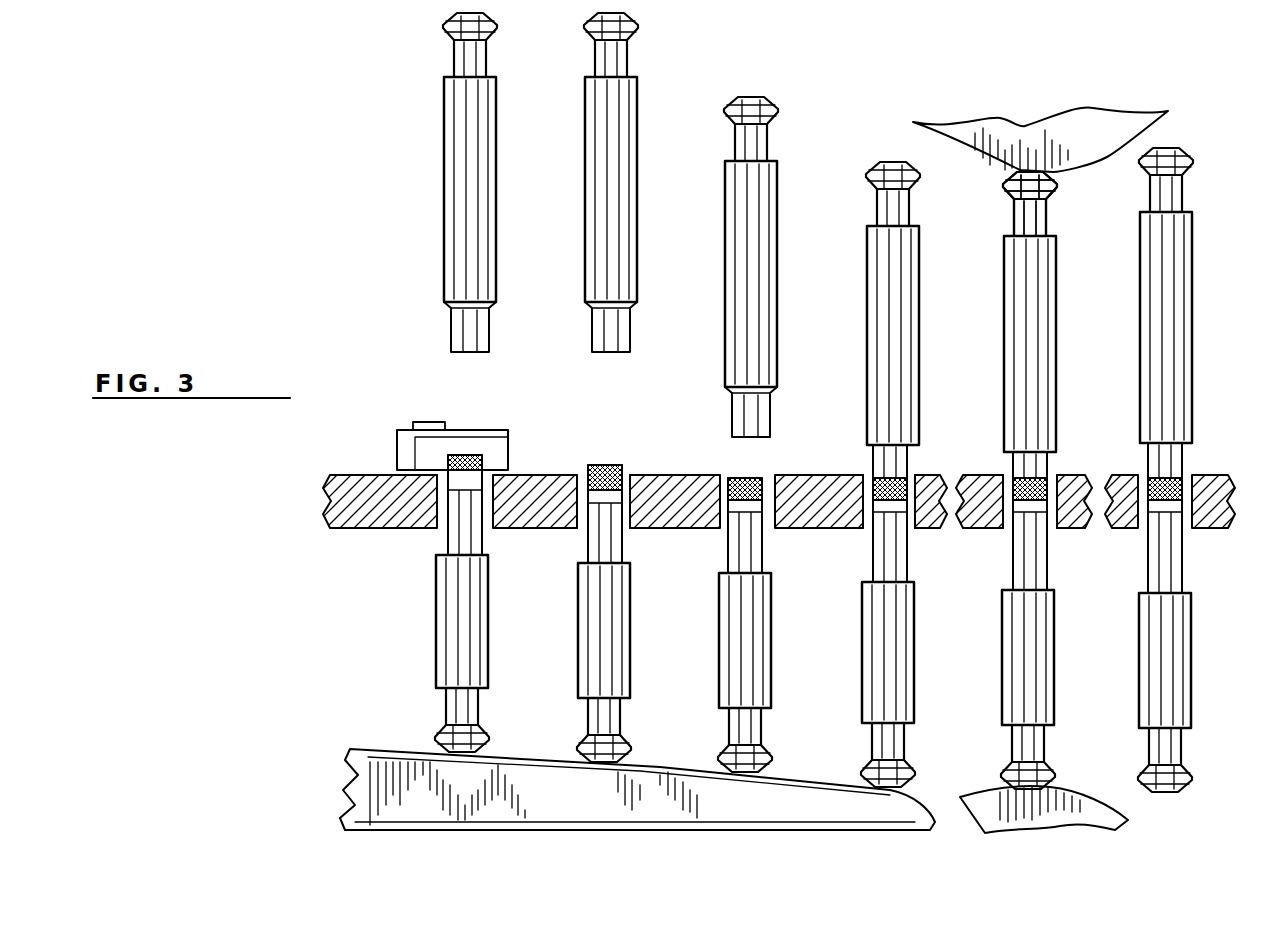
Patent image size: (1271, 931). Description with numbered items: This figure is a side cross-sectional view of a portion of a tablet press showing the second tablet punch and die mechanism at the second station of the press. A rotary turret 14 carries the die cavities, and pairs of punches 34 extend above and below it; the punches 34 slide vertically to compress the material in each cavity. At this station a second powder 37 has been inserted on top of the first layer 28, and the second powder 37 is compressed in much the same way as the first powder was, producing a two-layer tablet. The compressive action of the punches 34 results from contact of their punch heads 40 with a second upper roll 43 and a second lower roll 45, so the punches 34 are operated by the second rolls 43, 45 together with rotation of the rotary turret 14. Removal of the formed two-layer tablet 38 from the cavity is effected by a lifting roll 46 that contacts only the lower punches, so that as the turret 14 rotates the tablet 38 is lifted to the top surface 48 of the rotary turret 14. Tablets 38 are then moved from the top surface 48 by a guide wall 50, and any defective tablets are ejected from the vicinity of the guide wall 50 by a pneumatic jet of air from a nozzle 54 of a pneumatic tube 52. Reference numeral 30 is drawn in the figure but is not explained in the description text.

The rotary turret 14 is at (353, 513).
The first layer 28 is at (1165, 513).
The aperture 30 is at (580, 523).
The punches 34 is at (468, 210).
The second powder 37 is at (1192, 485).
The two-layer tablet 38 is at (600, 468).
The punch heads 40 is at (1018, 176).
The second upper roll 43 is at (1003, 127).
The second lower roll 45 is at (988, 798).
The lifting roll 46 is at (640, 790).
The top surface 48 is at (352, 472).
The guide wall 50 is at (500, 450).
The pneumatic tube 52 is at (425, 428).
The nozzle 54 is at (468, 458).